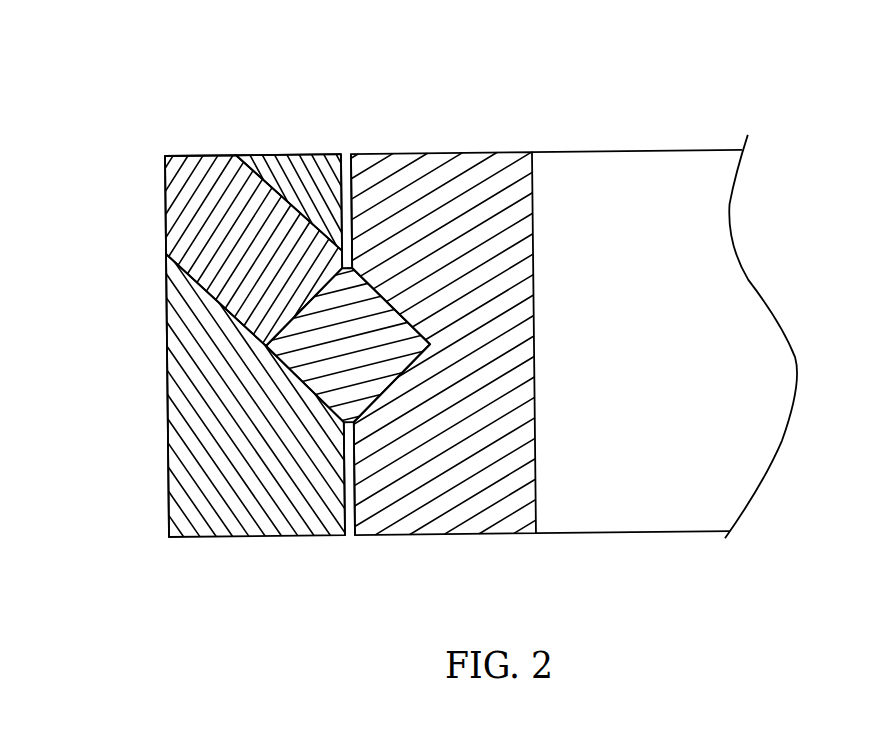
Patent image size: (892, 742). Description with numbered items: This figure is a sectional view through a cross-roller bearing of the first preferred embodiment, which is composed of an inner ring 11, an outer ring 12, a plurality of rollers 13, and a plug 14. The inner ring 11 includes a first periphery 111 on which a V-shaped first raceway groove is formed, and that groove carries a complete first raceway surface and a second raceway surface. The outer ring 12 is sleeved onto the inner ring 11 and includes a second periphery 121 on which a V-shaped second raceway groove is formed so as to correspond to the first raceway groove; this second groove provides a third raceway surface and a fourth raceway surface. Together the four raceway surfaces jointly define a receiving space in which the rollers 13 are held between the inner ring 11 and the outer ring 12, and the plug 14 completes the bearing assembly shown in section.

The inner ring 11 is at (473, 152).
The first periphery 111 is at (353, 197).
The outer ring 12 is at (260, 155).
The second periphery 121 is at (317, 155).
The rollers 13 is at (305, 375).
The plug 14 is at (242, 205).